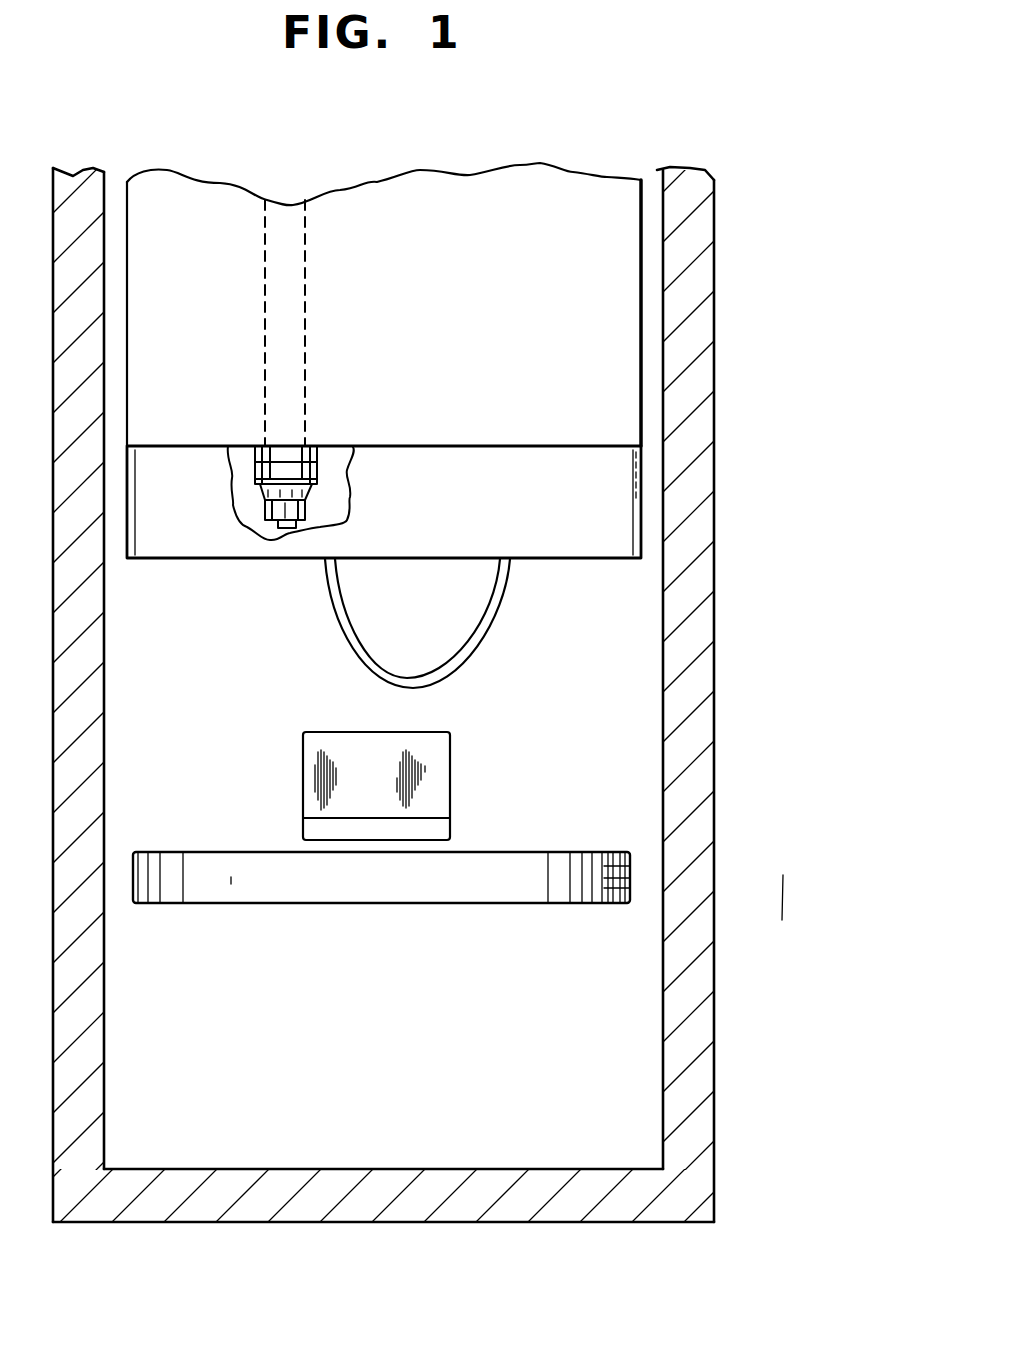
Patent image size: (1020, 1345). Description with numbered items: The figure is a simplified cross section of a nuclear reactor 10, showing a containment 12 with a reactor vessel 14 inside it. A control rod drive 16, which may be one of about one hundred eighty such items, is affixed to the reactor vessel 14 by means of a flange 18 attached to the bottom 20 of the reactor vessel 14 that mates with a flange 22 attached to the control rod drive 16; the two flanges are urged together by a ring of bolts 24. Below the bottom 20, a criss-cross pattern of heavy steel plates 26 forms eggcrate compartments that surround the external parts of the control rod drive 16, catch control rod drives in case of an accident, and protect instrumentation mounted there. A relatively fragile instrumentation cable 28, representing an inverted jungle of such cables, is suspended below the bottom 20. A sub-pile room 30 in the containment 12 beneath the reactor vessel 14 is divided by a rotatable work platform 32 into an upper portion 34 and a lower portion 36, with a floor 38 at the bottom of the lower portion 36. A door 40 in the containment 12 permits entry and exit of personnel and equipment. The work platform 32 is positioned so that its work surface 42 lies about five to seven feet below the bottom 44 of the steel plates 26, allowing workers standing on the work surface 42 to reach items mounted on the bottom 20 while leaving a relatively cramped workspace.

The nuclear reactor 10 is at (752, 368).
The containment 12 is at (700, 598).
The reactor vessel 14 is at (708, 240).
The control rod drive 16 is at (263, 413).
The flange 18 is at (318, 444).
The bottom 20 is at (625, 448).
The flange 22 is at (318, 477).
The ring of bolts 24 is at (265, 486).
The heavy steel plates 26 is at (492, 487).
The instrumentation cable 28 is at (478, 648).
The sub-pile room 30 is at (633, 805).
The rotatable work platform 32 is at (620, 880).
The upper portion 34 is at (630, 712).
The lower portion 36 is at (632, 1052).
The floor 38 is at (313, 1169).
The door 40 is at (427, 792).
The work surface 42 is at (186, 860).
The bottom 44 is at (553, 558).